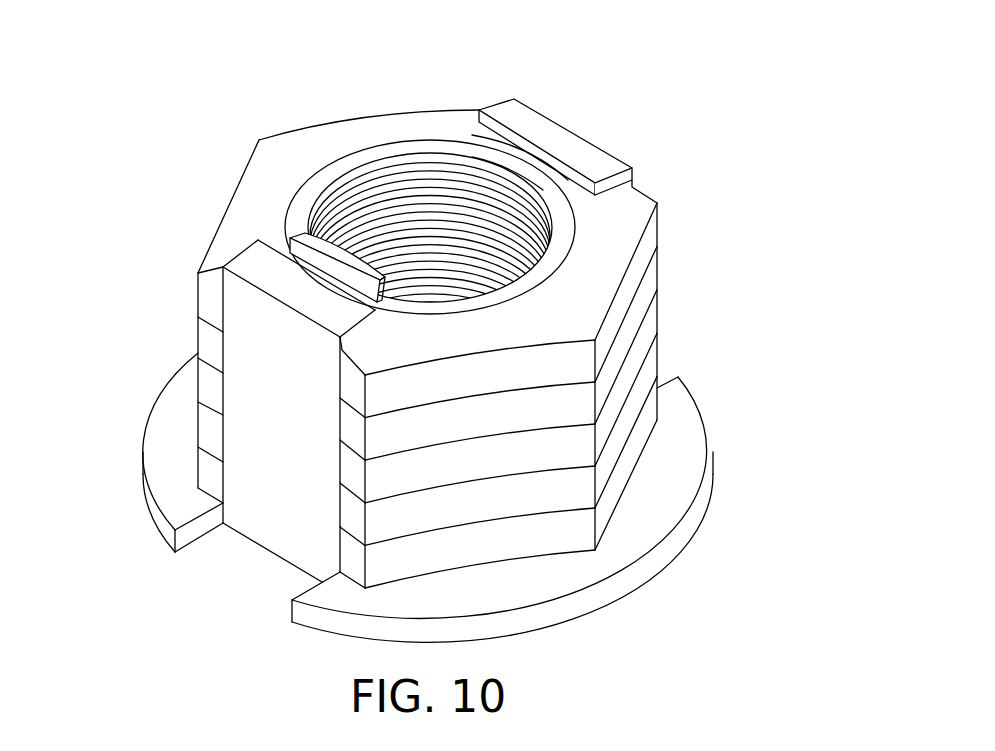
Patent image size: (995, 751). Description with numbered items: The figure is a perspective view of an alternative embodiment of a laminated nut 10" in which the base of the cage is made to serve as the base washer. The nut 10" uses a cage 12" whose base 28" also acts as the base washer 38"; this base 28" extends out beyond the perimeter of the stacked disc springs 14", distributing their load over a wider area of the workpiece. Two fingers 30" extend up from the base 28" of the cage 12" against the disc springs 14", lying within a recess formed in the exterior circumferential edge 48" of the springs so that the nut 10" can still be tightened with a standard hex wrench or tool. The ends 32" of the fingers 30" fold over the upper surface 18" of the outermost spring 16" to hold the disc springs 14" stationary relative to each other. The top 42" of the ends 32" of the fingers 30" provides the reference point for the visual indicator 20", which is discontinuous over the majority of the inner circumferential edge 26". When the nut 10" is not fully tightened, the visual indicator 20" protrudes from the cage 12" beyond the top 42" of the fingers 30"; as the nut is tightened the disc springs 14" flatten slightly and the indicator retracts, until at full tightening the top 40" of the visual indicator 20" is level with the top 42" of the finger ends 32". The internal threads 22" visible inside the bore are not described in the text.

The nut 10 is at (441, 338).
The cage 12 is at (473, 499).
The disc springs 14 is at (198, 357).
The outermost spring 16 is at (647, 240).
The upper surface 18 is at (448, 127).
The visual indicator 20 is at (575, 170).
The internal threads 22 is at (428, 183).
The inner circumferential edge 26 is at (333, 170).
The base 28 is at (692, 525).
The fingers 30 is at (292, 523).
The ends 32 is at (491, 116).
The base washer 38 is at (643, 570).
The top 40 is at (305, 245).
The top 42 is at (552, 135).
The exterior circumferential edge 48 is at (532, 528).